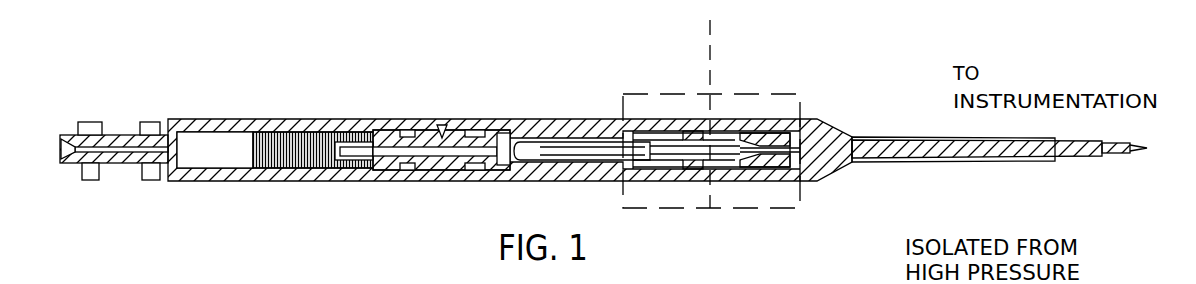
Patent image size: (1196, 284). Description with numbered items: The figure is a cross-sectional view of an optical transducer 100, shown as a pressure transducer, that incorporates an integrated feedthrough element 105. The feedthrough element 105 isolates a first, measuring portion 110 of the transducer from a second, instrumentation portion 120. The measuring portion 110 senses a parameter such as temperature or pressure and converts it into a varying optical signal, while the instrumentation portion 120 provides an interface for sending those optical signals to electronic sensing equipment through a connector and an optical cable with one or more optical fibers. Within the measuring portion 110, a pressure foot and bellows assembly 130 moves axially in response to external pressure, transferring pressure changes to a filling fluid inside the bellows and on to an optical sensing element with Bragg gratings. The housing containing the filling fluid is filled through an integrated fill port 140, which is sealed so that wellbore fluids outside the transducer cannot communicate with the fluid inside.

The optical transducer 100 is at (141, 96).
The feedthrough element 105 is at (708, 208).
The measuring portion 110 is at (634, 72).
The instrumentation portion 120 is at (788, 67).
The pressure foot and bellows assembly 130 is at (246, 193).
The integrated fill port 140 is at (432, 191).